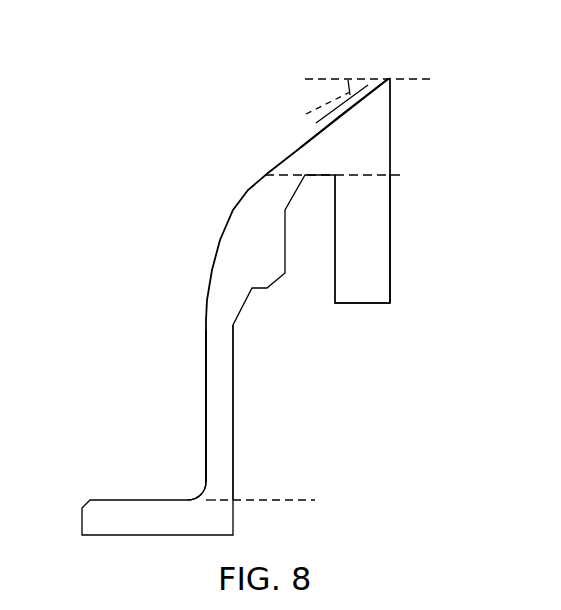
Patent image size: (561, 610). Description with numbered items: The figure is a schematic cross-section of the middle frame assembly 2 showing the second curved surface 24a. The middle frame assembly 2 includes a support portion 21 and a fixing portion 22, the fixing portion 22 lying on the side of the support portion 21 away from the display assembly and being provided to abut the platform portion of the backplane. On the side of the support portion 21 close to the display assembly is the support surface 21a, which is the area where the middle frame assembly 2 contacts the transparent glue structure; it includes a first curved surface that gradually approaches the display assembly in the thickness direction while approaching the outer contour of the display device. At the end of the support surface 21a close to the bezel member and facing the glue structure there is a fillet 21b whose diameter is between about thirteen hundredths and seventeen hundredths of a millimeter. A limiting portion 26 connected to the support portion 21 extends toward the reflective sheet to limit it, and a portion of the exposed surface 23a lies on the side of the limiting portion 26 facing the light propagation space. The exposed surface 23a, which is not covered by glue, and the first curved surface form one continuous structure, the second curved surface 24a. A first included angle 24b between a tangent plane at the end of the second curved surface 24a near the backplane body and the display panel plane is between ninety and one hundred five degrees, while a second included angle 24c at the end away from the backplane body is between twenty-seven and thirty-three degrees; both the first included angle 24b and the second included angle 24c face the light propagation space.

The middle frame assembly 2 is at (107, 33).
The support portion 21 is at (358, 129).
The support surface 21a is at (318, 125).
The fillet 21b is at (420, 74).
The fixing portion 22 is at (367, 243).
The exposed surface 23a is at (205, 348).
The second curved surface 24a is at (133, 100).
The first included angle 24b is at (190, 493).
The second included angle 24c is at (346, 87).
The limiting portion 26 is at (213, 430).